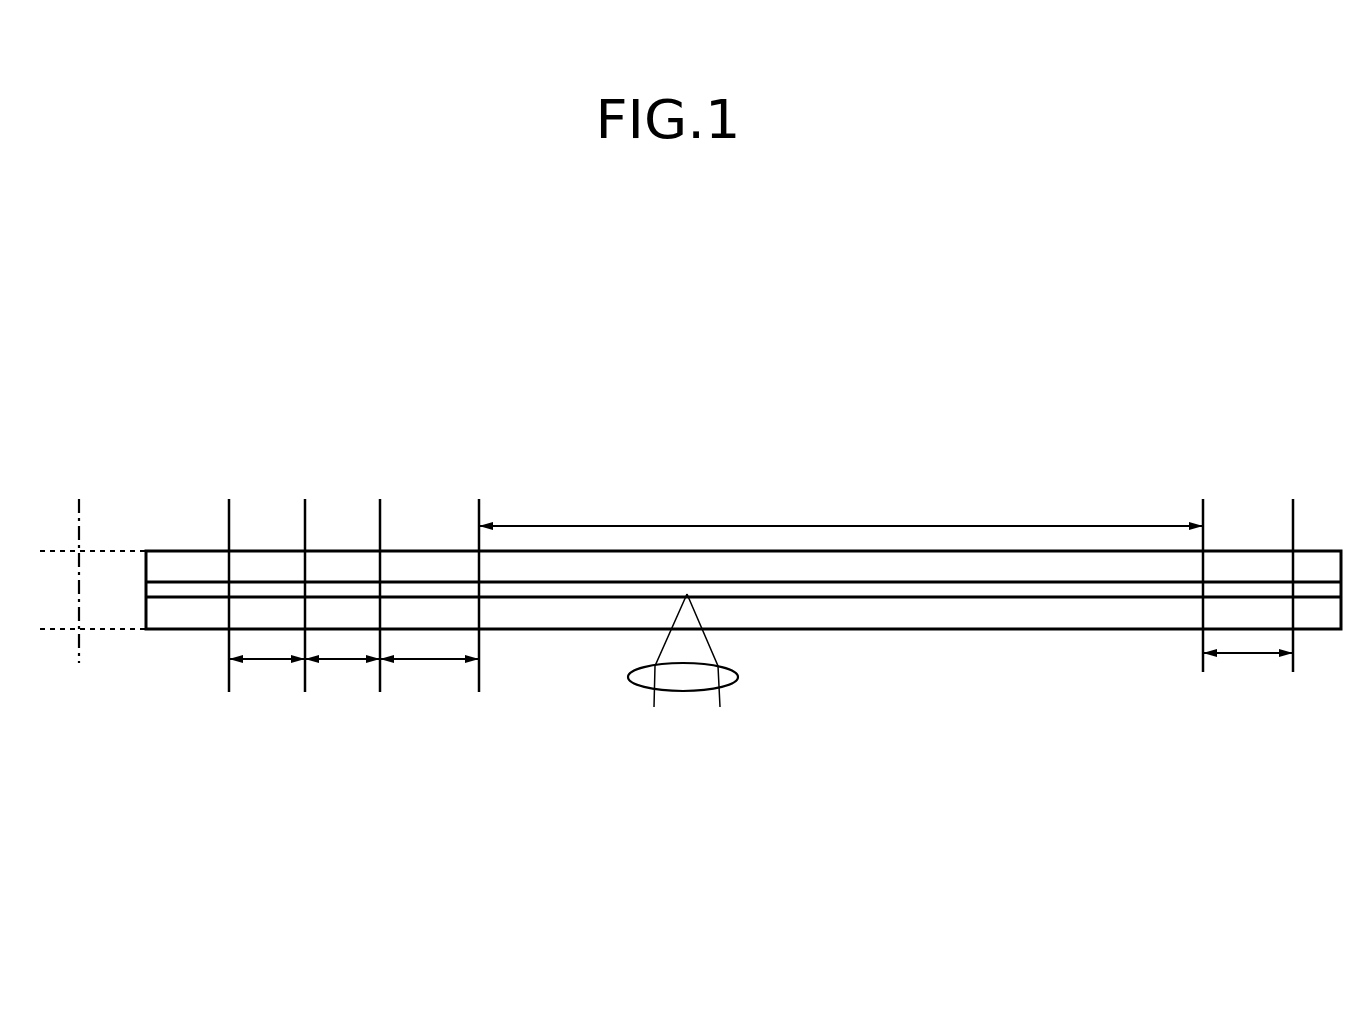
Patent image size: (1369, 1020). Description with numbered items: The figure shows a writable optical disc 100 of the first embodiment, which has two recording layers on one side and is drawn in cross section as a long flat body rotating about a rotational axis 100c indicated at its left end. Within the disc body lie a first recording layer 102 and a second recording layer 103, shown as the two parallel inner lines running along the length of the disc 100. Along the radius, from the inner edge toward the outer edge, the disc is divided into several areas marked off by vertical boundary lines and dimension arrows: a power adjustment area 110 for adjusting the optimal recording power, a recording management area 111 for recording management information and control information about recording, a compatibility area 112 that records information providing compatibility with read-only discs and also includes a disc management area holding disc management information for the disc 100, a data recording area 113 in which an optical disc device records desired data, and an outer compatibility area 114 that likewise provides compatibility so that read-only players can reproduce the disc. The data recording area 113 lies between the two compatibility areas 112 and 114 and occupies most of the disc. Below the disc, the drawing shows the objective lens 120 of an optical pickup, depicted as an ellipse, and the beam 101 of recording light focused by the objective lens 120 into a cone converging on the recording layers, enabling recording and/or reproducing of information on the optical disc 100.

The optical disc 100 is at (428, 547).
The rotational axis 100c is at (86, 524).
The beam 101 is at (707, 638).
The first recording layer 102 is at (1317, 600).
The second recording layer 103 is at (1318, 580).
The power adjustment area 110 is at (265, 661).
The recording management area 111 is at (342, 661).
The compatibility area 112 is at (433, 661).
The data recording area 113 is at (860, 526).
The compatibility area 114 is at (1255, 656).
The objective lens 120 is at (737, 681).